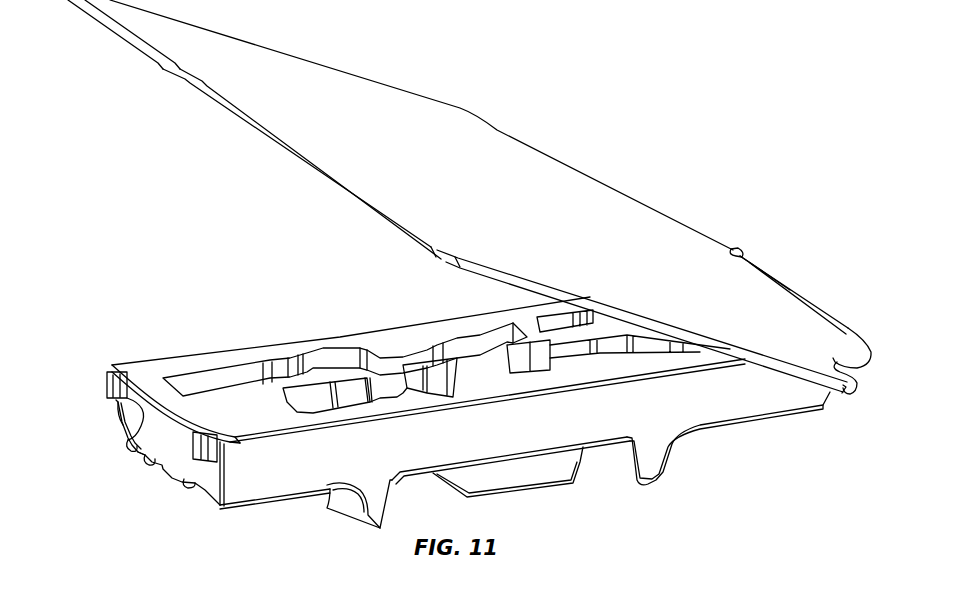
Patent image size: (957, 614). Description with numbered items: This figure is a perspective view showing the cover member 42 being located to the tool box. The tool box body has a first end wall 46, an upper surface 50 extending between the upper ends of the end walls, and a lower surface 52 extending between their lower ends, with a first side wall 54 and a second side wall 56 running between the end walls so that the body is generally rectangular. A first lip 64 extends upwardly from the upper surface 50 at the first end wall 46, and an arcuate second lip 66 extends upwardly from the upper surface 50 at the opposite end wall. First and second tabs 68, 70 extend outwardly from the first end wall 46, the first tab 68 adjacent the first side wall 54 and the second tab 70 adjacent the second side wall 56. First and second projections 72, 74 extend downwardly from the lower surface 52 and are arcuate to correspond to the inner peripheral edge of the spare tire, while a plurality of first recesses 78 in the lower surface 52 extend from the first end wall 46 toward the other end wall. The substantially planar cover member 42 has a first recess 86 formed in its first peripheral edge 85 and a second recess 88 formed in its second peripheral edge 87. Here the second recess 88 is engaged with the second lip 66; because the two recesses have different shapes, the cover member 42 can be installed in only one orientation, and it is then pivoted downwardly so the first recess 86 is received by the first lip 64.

The cover member 42 is at (393, 88).
The first end wall 46 is at (168, 450).
The upper surface 50 is at (288, 352).
The lower surface 52 is at (233, 505).
The first side wall 54 is at (197, 359).
The second side wall 56 is at (586, 432).
The first lip 64 is at (123, 425).
The second lip 66 is at (812, 290).
The first tab 68 is at (107, 378).
The second tab 70 is at (193, 452).
The first projection 72 is at (343, 520).
The second projection 74 is at (656, 481).
The first recesses 78 is at (135, 458).
The first peripheral edge 85 is at (124, 46).
The first recess 86 is at (222, 116).
The second peripheral edge 87 is at (866, 345).
The second recess 88 is at (762, 268).